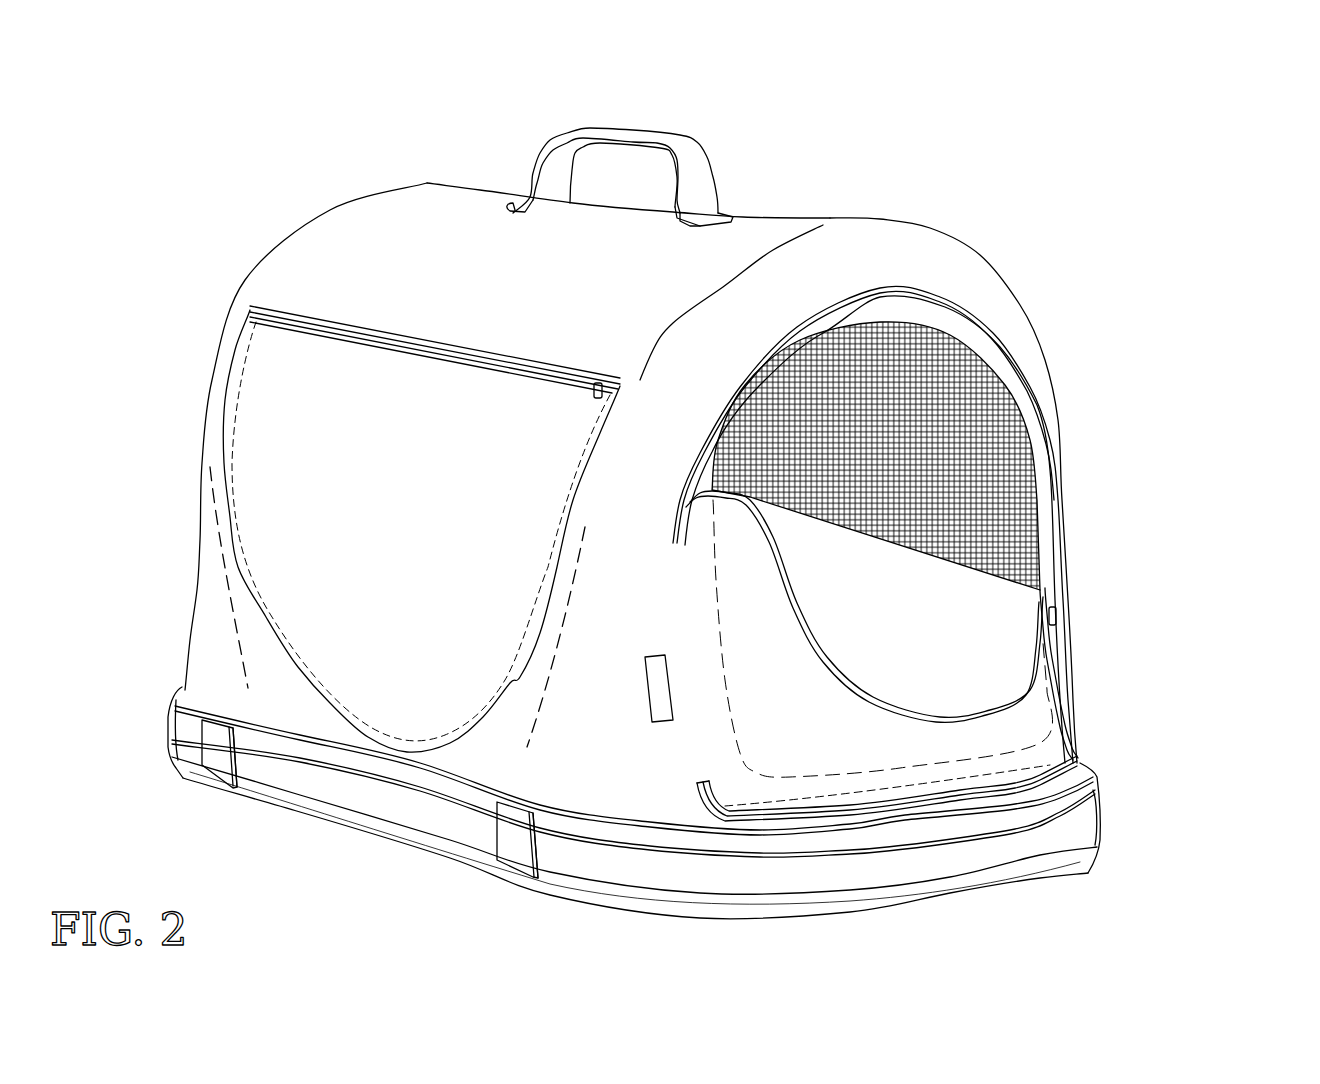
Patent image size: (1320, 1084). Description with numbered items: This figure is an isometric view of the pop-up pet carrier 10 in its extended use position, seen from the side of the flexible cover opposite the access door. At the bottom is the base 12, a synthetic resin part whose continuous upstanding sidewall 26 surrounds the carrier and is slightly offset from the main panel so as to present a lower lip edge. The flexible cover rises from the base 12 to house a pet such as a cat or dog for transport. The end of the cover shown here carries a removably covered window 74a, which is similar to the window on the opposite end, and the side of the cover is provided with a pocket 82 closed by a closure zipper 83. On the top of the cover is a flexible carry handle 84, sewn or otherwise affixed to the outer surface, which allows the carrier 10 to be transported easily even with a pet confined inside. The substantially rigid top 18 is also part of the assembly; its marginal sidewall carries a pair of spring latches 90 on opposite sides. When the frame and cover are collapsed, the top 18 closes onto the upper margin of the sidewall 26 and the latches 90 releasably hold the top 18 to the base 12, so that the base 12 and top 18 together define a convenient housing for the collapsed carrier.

The pop-up pet carrier 10 is at (1113, 259).
The base 12 is at (1160, 867).
The top 18 is at (1077, 881).
The sidewall 26 is at (1095, 815).
The window 74a is at (997, 512).
The pocket 82 is at (315, 452).
The closure zipper 83 is at (335, 327).
The flexible carry handle 84 is at (643, 137).
The spring latches 90 is at (215, 748).